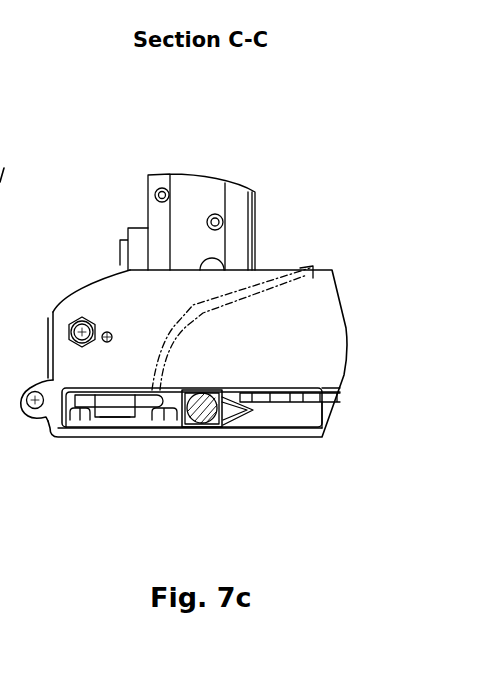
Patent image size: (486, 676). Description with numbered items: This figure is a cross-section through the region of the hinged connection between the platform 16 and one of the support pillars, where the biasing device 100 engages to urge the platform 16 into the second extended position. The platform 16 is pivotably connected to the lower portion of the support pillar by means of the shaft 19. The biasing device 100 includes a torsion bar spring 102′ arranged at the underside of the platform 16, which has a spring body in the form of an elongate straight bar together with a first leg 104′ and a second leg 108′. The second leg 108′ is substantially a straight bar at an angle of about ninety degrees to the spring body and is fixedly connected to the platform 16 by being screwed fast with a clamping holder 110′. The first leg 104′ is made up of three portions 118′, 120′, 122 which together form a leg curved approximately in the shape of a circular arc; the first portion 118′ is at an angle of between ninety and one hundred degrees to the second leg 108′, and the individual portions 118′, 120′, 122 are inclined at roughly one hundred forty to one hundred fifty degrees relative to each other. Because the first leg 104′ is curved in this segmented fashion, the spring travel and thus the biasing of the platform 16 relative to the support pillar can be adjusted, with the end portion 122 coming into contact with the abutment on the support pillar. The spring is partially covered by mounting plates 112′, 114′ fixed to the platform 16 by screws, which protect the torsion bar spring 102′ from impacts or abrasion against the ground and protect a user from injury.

The biasing device 100 is at (349, 239).
The platform 16 is at (359, 306).
The shaft 19 is at (206, 415).
The torsion bar spring 102′ is at (170, 311).
The first leg 104′ is at (278, 268).
The second leg 108′ is at (88, 386).
The clamping holder 110′ is at (123, 426).
The mounting plate 112′ is at (164, 426).
The mounting plate 114′ is at (79, 426).
The first portion of first leg 118′ is at (178, 365).
The second portion of first leg 120′ is at (199, 331).
The third portion of first leg 122 is at (275, 298).